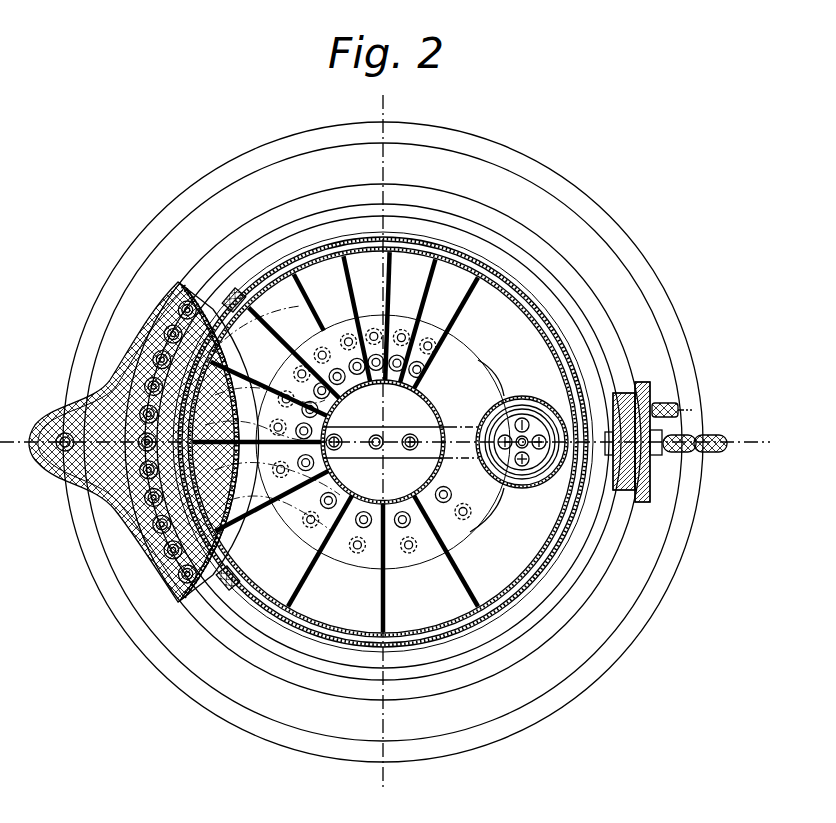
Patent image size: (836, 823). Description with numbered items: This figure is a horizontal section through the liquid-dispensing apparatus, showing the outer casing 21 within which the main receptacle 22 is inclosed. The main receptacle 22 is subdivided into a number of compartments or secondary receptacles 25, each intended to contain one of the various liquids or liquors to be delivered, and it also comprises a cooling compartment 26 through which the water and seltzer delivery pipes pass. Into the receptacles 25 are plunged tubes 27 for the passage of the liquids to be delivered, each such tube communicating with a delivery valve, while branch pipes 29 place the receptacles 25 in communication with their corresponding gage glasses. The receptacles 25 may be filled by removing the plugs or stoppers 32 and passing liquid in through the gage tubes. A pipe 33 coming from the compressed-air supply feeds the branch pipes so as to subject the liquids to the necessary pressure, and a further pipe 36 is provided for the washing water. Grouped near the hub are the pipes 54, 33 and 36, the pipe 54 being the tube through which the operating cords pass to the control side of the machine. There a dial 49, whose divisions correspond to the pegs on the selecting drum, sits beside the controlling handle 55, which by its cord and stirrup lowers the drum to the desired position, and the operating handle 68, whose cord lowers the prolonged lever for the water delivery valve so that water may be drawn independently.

The outer casing 21 is at (473, 265).
The main receptacle 22 is at (512, 293).
The compartments or secondary receptacles 25 is at (335, 442).
The cooling compartment 26 is at (505, 457).
The tubes 27 is at (357, 437).
The branch pipes 29 is at (466, 516).
The plugs or stoppers 32 is at (186, 603).
The pipe 33 is at (376, 435).
The pipe 36 is at (412, 436).
The dial 49 is at (650, 388).
The pipe 54 is at (336, 436).
The controlling handle 55 is at (715, 436).
The operating handle 68 is at (685, 434).